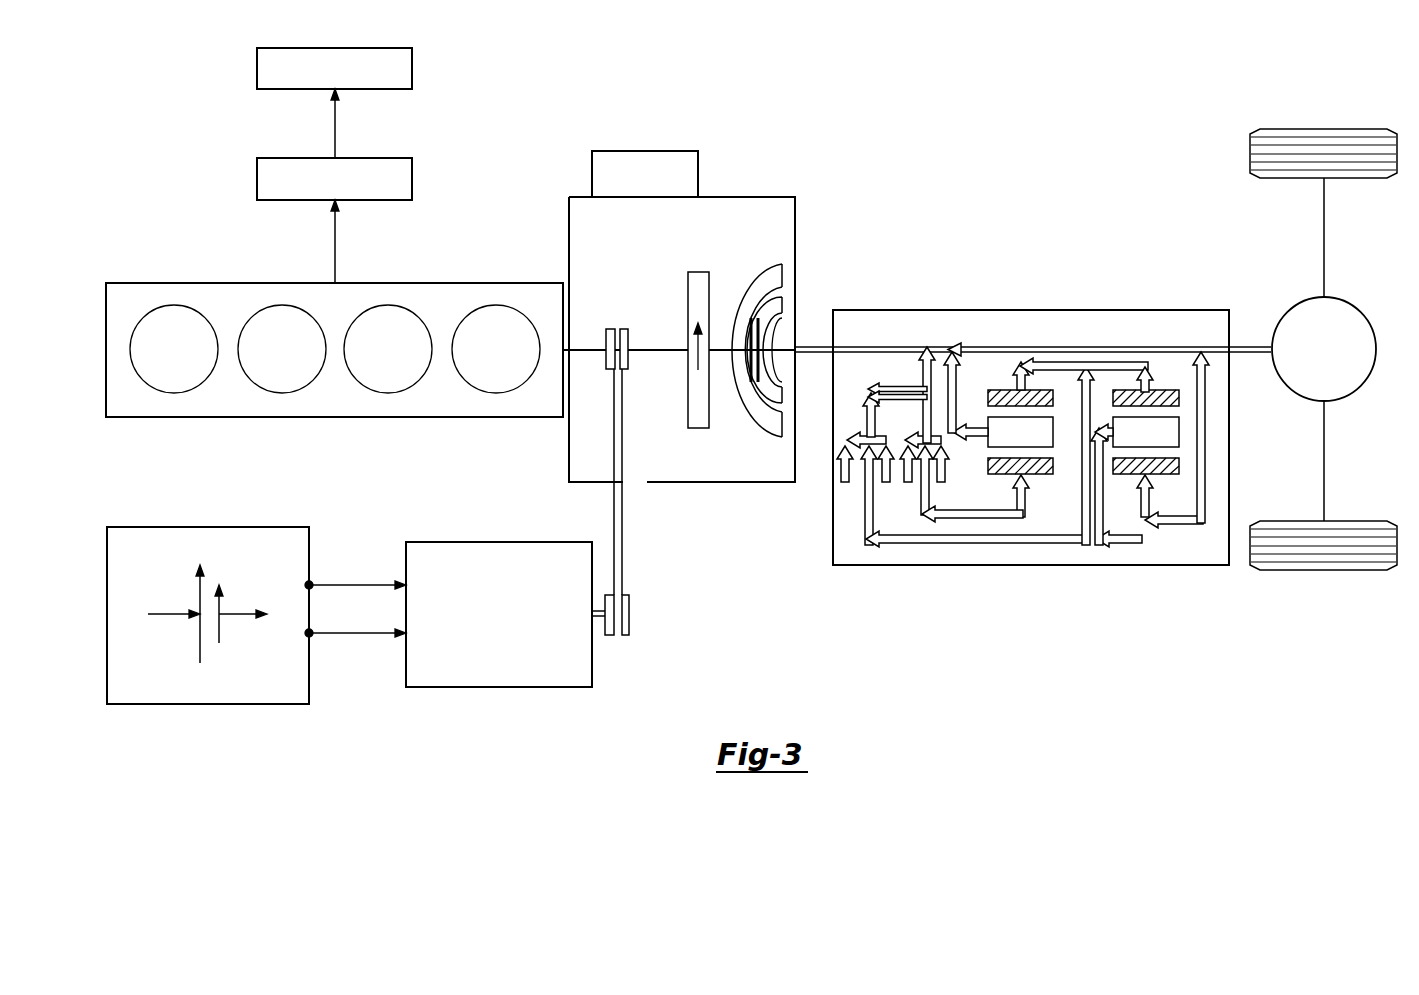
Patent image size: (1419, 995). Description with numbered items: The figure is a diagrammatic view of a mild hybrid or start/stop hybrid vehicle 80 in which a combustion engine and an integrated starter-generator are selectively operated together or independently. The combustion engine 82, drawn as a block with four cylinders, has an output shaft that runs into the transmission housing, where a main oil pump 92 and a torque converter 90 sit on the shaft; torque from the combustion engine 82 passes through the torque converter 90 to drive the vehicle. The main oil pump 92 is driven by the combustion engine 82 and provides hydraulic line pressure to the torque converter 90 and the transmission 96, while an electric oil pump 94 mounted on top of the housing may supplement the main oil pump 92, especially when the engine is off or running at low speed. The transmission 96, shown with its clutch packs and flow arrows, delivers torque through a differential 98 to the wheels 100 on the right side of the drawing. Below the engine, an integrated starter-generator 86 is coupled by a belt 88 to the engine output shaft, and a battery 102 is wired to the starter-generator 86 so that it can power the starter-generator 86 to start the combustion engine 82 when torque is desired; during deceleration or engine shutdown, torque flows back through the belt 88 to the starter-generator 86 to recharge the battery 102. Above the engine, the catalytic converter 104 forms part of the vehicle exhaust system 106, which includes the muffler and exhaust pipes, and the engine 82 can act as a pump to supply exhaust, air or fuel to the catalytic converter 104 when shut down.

The mild hybrid vehicle 80 is at (860, 132).
The combustion engine 82 is at (210, 283).
The integrated starter-generator (ISG) 86 is at (497, 687).
The belt 88 is at (623, 525).
The torque converter 90 is at (758, 418).
The main oil pump 92 is at (698, 272).
The electric oil pump 94 is at (698, 175).
The transmission 96 is at (1033, 310).
The differential 98 is at (1301, 300).
The wheels 100 is at (1323, 129).
The battery 102 is at (208, 704).
The catalytic converter 104 is at (412, 180).
The vehicle exhaust system 106 is at (412, 70).